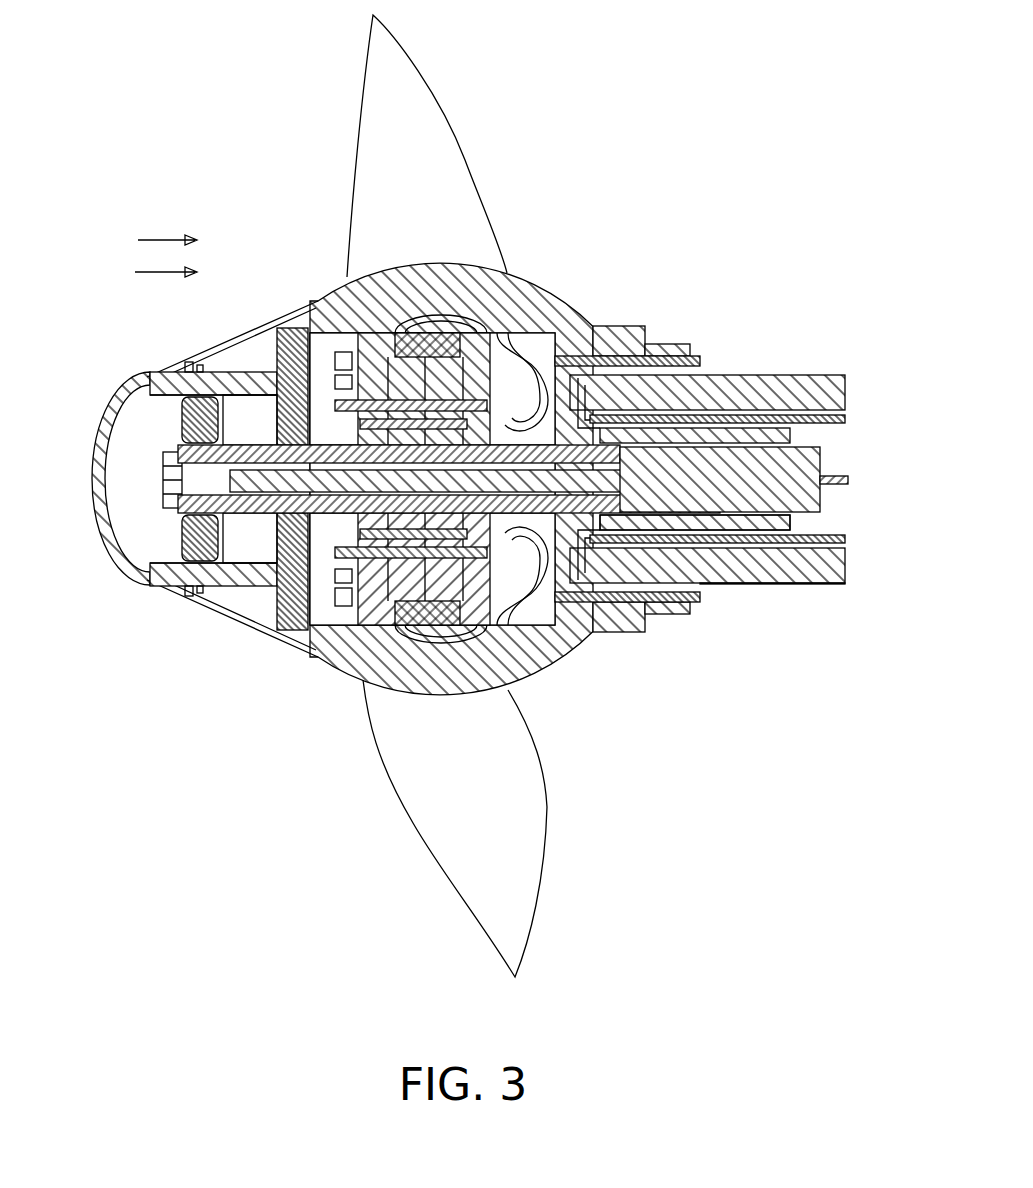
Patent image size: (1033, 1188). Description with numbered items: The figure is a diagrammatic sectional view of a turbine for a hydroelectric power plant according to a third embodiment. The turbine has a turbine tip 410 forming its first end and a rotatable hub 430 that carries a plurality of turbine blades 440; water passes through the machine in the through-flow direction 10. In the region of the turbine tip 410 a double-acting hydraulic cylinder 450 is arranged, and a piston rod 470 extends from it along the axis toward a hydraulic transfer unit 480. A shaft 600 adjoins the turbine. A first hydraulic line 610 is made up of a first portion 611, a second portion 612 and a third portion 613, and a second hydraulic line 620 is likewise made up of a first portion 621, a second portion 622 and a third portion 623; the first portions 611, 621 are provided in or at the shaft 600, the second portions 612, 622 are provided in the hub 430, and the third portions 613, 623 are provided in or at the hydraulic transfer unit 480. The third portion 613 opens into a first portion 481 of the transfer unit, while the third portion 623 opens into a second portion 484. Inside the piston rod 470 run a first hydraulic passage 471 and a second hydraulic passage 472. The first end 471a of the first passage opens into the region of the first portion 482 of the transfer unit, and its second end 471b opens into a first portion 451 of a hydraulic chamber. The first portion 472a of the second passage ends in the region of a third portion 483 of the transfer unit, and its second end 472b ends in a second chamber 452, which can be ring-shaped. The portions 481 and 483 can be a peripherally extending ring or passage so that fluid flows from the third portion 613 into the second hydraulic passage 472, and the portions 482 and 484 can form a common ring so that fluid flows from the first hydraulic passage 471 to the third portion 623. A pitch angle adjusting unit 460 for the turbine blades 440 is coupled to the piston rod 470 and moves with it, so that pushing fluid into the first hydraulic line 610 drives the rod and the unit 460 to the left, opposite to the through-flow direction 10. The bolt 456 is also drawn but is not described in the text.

The through-flow direction 10 is at (157, 238).
The turbine tip 410 is at (150, 375).
The rotatable hub 430 is at (324, 316).
The turbine blades 440 is at (432, 118).
The double-acting hydraulic cylinder 450 is at (198, 600).
The first portion of hydraulic chamber 451 is at (133, 440).
The second chamber 452 is at (253, 415).
The fastening bolt 456 is at (160, 467).
The pitch angle adjusting unit 460 is at (470, 615).
The piston rod 470 is at (482, 560).
The first hydraulic passage 471 is at (612, 333).
The first end of first hydraulic passage 471a is at (650, 345).
The second end of first hydraulic passage 471b is at (178, 450).
The second hydraulic passage 472 is at (700, 470).
The first portion of second hydraulic line 472a is at (755, 585).
The second end of second hydraulic line 472b is at (223, 590).
The hydraulic transfer unit 480 is at (792, 433).
The first portion of hydraulic transfer unit 481 is at (820, 465).
The first portion of hydraulic transfer unit 482 is at (718, 430).
The third portion of hydraulic transfer unit 483 is at (822, 498).
The second portion of hydraulic transfer unit 484 is at (661, 634).
The shaft 600 is at (760, 594).
The first hydraulic line 610 is at (815, 376).
The first portion of first hydraulic line 611 is at (598, 325).
The second portion of first hydraulic line 612 is at (580, 356).
The third portion of first hydraulic line 613 is at (680, 350).
The second hydraulic line 620 is at (843, 541).
The first portion of second hydraulic line 621 is at (640, 634).
The second portion of second hydraulic line 622 is at (570, 640).
The third portion of second hydraulic line 623 is at (718, 592).